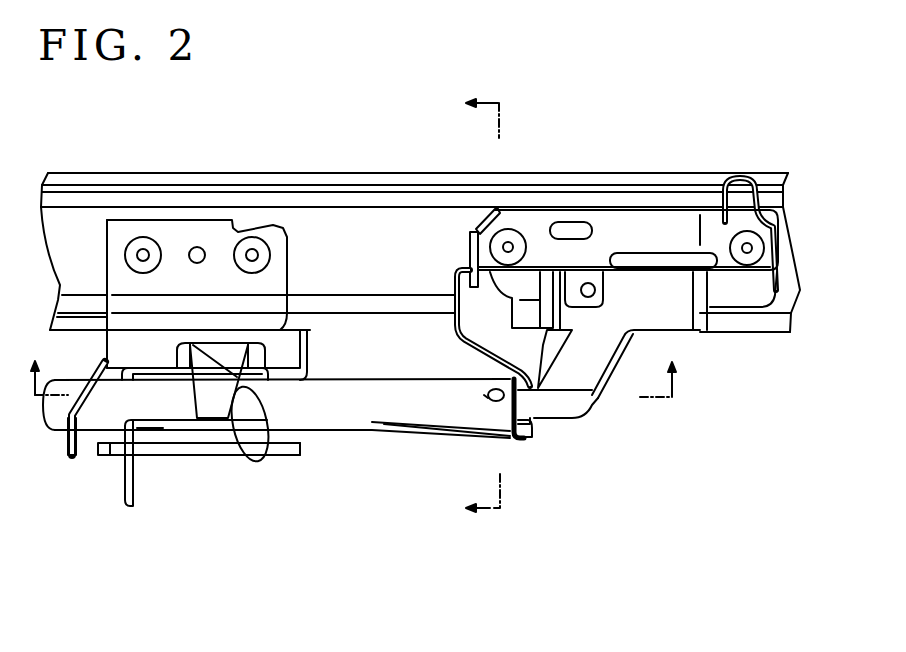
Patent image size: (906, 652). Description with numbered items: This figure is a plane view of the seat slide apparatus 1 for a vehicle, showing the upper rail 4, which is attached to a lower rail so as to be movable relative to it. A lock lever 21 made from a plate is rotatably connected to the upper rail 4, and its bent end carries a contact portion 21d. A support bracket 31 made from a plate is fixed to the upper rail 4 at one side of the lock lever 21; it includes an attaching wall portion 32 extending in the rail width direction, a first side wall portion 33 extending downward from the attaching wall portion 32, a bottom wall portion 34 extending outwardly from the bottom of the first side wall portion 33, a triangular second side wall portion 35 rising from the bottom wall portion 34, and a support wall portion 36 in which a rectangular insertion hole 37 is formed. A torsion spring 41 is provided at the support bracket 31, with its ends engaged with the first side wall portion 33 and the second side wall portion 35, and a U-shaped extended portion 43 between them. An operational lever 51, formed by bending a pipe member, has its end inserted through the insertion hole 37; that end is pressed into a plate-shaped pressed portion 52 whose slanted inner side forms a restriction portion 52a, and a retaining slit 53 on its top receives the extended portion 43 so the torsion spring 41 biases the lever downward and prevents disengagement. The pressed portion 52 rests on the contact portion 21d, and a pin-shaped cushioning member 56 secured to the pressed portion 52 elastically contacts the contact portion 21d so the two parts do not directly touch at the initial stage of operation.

The seat slide apparatus 1 is at (623, 133).
The upper rail 4 is at (337, 172).
The lock lever 21 is at (604, 356).
The contact portion 21d is at (578, 407).
The support bracket 31 is at (333, 286).
The attaching wall portion 32 is at (107, 235).
The first side wall portion 33 is at (303, 374).
The bottom wall portion 34 is at (303, 449).
The second side wall portion 35 is at (290, 456).
The support wall portion 36 is at (80, 375).
The insertion hole 37 is at (66, 424).
The torsion spring 41 is at (124, 490).
The extended portion 43 is at (235, 447).
The operational lever 51 is at (393, 430).
The pressed portion 52 is at (392, 384).
The restriction portion 52a is at (507, 442).
The retaining slit 53 is at (260, 438).
The cushioning member 56 is at (486, 396).